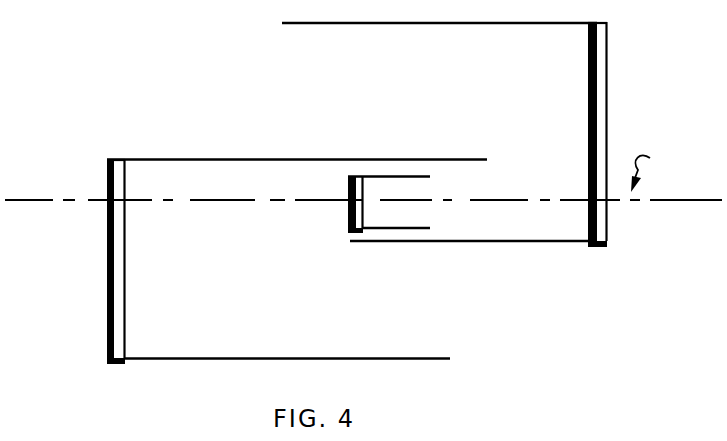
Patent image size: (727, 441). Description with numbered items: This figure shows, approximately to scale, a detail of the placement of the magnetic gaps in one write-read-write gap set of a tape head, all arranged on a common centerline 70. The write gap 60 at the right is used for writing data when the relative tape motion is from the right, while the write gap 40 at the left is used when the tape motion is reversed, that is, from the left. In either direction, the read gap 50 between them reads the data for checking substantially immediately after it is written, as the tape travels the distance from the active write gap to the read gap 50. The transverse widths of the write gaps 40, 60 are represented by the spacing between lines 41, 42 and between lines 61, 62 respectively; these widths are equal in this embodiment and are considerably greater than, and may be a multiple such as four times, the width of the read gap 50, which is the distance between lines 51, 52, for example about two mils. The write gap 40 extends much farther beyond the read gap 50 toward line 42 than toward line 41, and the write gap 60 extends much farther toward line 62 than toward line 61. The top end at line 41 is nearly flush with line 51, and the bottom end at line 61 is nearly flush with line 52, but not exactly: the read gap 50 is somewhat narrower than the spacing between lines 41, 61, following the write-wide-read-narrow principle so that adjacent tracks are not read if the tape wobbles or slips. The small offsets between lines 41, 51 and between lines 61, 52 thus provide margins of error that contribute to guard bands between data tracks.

The write gap 40 is at (106, 326).
The line 41 is at (313, 158).
The line 42 is at (306, 358).
The read gap 50 is at (363, 183).
The line 51 is at (407, 177).
The line 52 is at (413, 229).
The write gap 60 is at (597, 60).
The line 61 is at (449, 239).
The line 62 is at (420, 24).
The centerline 70 is at (657, 171).